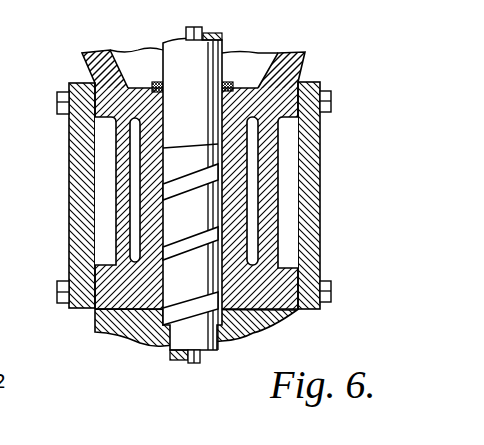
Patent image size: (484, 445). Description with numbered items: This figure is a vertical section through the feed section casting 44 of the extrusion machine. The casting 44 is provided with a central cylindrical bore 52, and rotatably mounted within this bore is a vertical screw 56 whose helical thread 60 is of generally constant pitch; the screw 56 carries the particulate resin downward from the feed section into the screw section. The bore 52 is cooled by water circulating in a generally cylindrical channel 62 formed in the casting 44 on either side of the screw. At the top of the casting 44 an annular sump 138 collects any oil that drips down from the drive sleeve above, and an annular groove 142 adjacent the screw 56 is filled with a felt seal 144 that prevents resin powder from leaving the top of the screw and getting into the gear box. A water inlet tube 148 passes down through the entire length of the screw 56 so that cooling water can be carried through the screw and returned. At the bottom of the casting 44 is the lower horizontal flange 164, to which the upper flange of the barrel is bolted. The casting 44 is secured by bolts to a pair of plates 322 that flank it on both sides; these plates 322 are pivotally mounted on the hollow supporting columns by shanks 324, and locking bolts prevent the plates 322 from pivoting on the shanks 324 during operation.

The shank 324 is at (41, 5).
The annular groove 142 is at (121, 48).
The felt seal 144 is at (157, 85).
The water inlet tube 148 is at (203, 29).
The annular sump 138 is at (257, 90).
The plate 322 is at (78, 146).
The cylindrical channel 62 is at (137, 175).
The central cylindrical bore 52 is at (167, 163).
The casting 44 is at (292, 181).
The lower horizontal flange 164 is at (288, 283).
The helical thread 60 is at (185, 306).
The vertical screw 56 is at (182, 353).